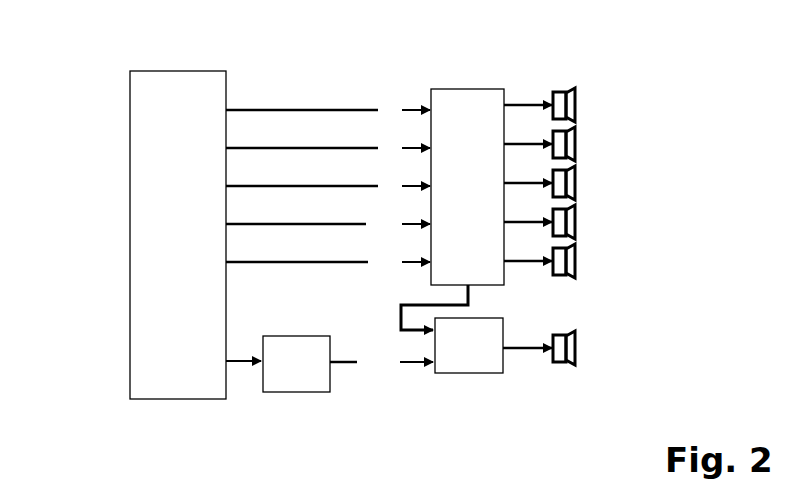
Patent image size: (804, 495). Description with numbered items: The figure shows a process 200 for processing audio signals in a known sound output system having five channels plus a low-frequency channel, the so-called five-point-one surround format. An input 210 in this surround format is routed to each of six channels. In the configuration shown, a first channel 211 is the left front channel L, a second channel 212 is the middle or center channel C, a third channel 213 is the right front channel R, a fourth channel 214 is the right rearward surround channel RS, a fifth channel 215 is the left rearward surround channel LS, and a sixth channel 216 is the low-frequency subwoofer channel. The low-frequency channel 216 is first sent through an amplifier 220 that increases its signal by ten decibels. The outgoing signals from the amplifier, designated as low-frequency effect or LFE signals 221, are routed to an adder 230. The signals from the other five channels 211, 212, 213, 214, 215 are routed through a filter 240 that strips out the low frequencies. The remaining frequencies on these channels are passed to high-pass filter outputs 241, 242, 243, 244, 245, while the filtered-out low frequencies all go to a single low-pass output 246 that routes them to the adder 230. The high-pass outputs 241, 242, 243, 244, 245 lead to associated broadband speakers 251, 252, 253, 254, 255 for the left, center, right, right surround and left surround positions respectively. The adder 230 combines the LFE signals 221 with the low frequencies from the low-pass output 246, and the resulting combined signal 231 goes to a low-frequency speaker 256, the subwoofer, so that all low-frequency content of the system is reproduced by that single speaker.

The process 200 is at (82, 88).
The input 210 is at (185, 400).
The first channel 211 is at (328, 101).
The second channel 212 is at (328, 139).
The third channel 213 is at (328, 177).
The fourth channel 214 is at (328, 215).
The fifth channel 215 is at (328, 253).
The sixth channel 216 is at (241, 364).
The amplifier 220 is at (303, 393).
The LFE signals 221 is at (345, 364).
The adder 230 is at (452, 373).
The combined signal 231 is at (527, 332).
The filter 240 is at (451, 89).
The high-pass filter output 241 is at (528, 95).
The high-pass filter output 242 is at (528, 134).
The high-pass filter output 243 is at (528, 173).
The high-pass filter output 244 is at (528, 212).
The high-pass filter output 245 is at (528, 251).
The low-pass output 246 is at (410, 307).
The broadband speaker 251 is at (573, 90).
The broadband speaker 252 is at (575, 128).
The broadband speaker 253 is at (575, 167).
The broadband speaker 254 is at (575, 240).
The broadband speaker 255 is at (575, 278).
The low-frequency speaker 256 is at (568, 366).